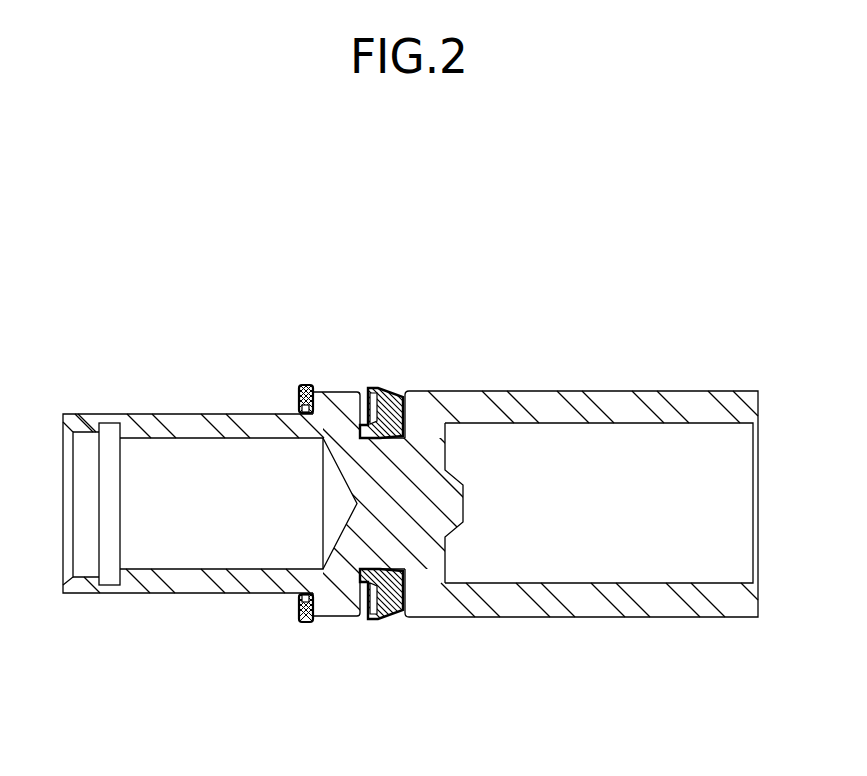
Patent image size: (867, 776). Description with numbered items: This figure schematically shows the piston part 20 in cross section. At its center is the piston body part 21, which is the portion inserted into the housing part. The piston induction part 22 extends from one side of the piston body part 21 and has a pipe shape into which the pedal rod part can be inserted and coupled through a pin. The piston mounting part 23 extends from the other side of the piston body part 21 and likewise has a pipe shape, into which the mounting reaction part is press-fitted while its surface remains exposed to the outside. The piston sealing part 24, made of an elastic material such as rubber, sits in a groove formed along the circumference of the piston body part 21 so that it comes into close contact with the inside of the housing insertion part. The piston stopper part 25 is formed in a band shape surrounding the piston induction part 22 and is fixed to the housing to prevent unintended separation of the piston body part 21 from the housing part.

The piston part 20 is at (750, 247).
The piston body part 21 is at (335, 618).
The piston induction part 22 is at (187, 583).
The piston mounting part 23 is at (595, 617).
The piston sealing part 24 is at (392, 386).
The piston stopper part 25 is at (306, 385).